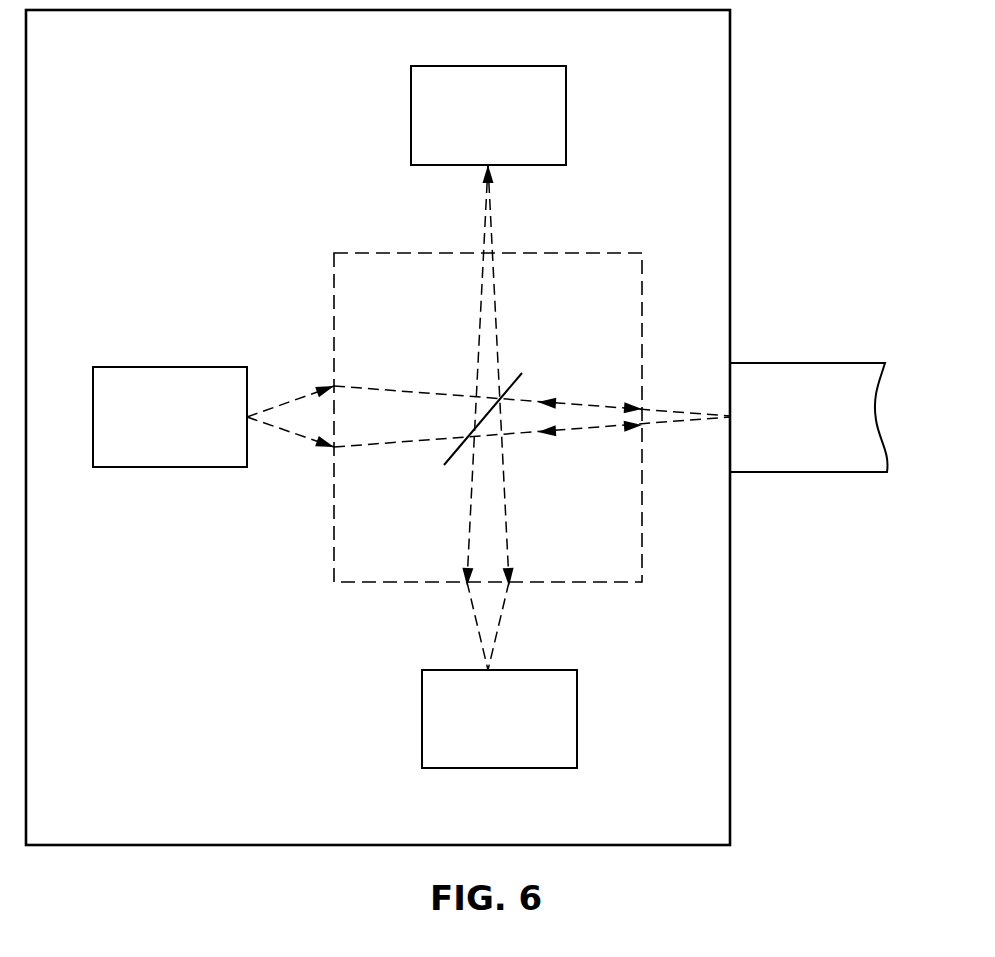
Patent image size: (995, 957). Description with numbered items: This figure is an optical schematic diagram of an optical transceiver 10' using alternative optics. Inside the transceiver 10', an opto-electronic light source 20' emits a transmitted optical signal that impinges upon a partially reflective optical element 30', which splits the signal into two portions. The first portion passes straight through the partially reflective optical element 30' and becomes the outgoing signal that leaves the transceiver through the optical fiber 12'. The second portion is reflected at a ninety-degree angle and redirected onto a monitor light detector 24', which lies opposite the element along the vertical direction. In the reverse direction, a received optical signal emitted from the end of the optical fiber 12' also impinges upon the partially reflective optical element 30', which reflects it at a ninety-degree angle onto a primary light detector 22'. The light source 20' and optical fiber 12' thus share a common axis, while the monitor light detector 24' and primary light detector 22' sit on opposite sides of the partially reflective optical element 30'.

The optical transceiver 10' is at (422, 427).
The optical fiber 12' is at (809, 392).
The opto-electronic light source 20' is at (170, 392).
The primary light detector 22' is at (539, 719).
The monitor light detector 24' is at (527, 115).
The partially reflective optical element 30' is at (471, 443).